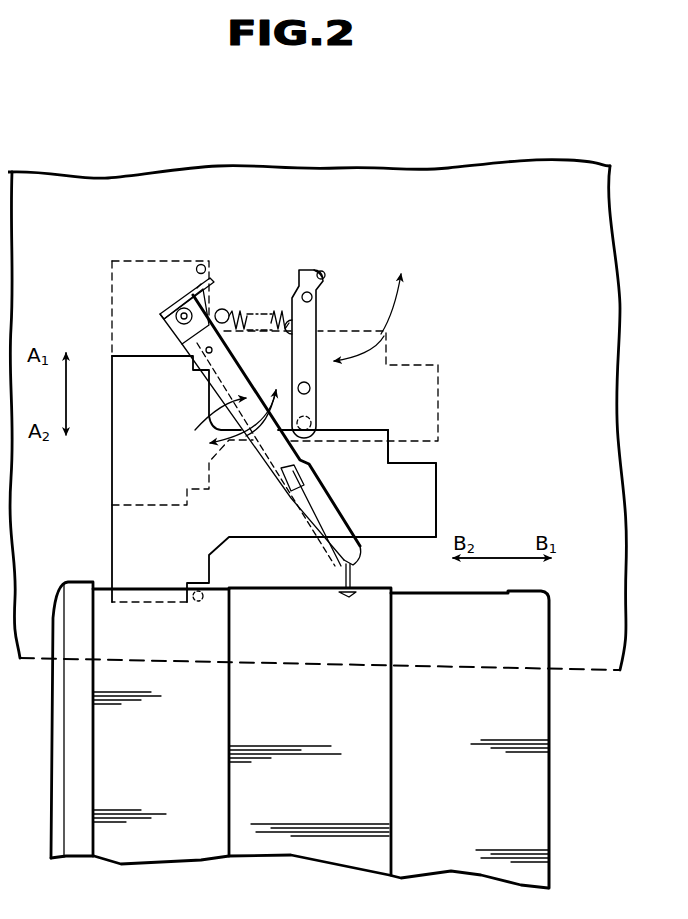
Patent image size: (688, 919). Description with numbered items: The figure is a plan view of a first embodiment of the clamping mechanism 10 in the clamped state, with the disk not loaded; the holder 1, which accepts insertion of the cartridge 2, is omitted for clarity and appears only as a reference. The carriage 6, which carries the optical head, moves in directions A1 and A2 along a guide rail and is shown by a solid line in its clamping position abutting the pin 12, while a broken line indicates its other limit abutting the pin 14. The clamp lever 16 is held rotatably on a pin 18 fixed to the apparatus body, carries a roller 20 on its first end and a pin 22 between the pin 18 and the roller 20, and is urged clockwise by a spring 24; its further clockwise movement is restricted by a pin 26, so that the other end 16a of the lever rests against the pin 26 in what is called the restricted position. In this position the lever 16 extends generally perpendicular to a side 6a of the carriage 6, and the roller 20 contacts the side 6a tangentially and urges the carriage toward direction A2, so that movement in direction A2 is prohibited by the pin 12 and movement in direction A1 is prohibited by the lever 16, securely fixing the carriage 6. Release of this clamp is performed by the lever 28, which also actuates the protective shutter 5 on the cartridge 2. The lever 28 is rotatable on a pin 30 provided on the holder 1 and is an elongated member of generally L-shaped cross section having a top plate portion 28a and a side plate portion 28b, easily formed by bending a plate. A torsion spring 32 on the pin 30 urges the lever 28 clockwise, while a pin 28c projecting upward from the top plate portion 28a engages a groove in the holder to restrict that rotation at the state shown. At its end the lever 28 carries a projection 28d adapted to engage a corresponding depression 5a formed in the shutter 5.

The holder 1 is at (525, 372).
The cartridge 2 is at (517, 718).
The protective shutter 5 is at (348, 733).
The depression 5a is at (348, 600).
The carriage 6 is at (415, 415).
The side of the carriage 6a is at (366, 432).
The clamping mechanism 10 is at (339, 210).
The pin 12 is at (199, 604).
The pin 14 is at (203, 267).
The clamp lever 16 is at (306, 331).
The other end of the lever 16a is at (318, 275).
The pin 18 is at (312, 299).
The roller 20 is at (306, 434).
The pin 22 is at (310, 389).
The spring 24 is at (226, 312).
The pin 26 is at (324, 276).
The lever 28 is at (260, 427).
The top plate portion 28a is at (330, 523).
The side plate portion 28b is at (262, 460).
The pin 28c is at (212, 352).
The projection 28d is at (353, 579).
The pin 30 is at (177, 311).
The torsion spring 32 is at (196, 290).